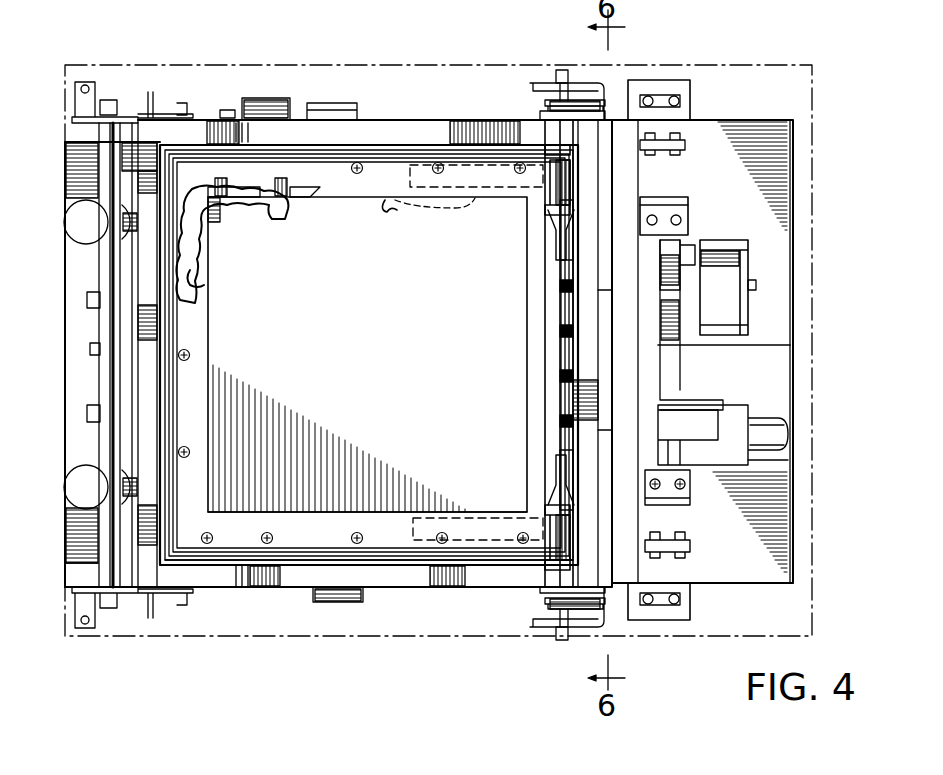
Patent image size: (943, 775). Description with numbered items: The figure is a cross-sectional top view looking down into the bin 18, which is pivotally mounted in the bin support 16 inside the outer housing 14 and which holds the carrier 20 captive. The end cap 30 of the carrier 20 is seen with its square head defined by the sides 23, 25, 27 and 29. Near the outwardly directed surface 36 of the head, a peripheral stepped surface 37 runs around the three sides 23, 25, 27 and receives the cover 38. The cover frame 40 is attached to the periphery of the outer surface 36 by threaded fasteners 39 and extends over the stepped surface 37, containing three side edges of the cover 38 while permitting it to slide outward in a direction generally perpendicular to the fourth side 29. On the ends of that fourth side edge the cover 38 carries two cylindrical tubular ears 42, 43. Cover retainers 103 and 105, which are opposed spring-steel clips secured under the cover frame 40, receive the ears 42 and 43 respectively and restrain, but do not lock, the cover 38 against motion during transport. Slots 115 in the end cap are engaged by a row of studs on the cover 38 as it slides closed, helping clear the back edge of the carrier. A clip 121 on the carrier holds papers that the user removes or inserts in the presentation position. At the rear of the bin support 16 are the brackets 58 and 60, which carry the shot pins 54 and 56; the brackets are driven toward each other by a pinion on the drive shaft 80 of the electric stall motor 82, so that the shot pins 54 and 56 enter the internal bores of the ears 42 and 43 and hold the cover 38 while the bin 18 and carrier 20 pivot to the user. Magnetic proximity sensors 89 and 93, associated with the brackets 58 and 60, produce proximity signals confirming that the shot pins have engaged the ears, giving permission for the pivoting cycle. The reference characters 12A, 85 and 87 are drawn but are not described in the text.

The outer housing 14 is at (433, 65).
The side of head 27 is at (380, 143).
The cover 38 is at (374, 365).
The peripheral stepped surface 37 is at (205, 215).
The outwardly directed surface 36 is at (204, 290).
The cover frame 40 is at (320, 200).
The clip 121 is at (396, 212).
The cover retainer 103 is at (438, 195).
The cover retainer 105 is at (467, 512).
The threaded fasteners 39 is at (190, 358).
The fourth side of head 29 is at (580, 275).
The ear 42 is at (555, 207).
The ear 43 is at (548, 513).
The slots 115 is at (565, 316).
The side of head 25 is at (165, 267).
The rollers 12A is at (75, 486).
The bin 18 is at (63, 543).
The side of head 23 is at (237, 568).
The end cap 30 is at (292, 550).
The carrier 20 is at (392, 572).
The bin support 16 is at (430, 590).
The shot pin 54 is at (536, 93).
The bracket 58 is at (545, 83).
The shot pin 56 is at (566, 633).
The bracket 60 is at (610, 620).
The mounting bracket 85 is at (687, 148).
The magnetic proximity sensor 89 is at (683, 196).
The drive shaft 80 is at (694, 260).
The electric stall motor 82 is at (765, 308).
The magnetic proximity sensor 93 is at (682, 505).
The lower mounting bracket 87 is at (690, 548).